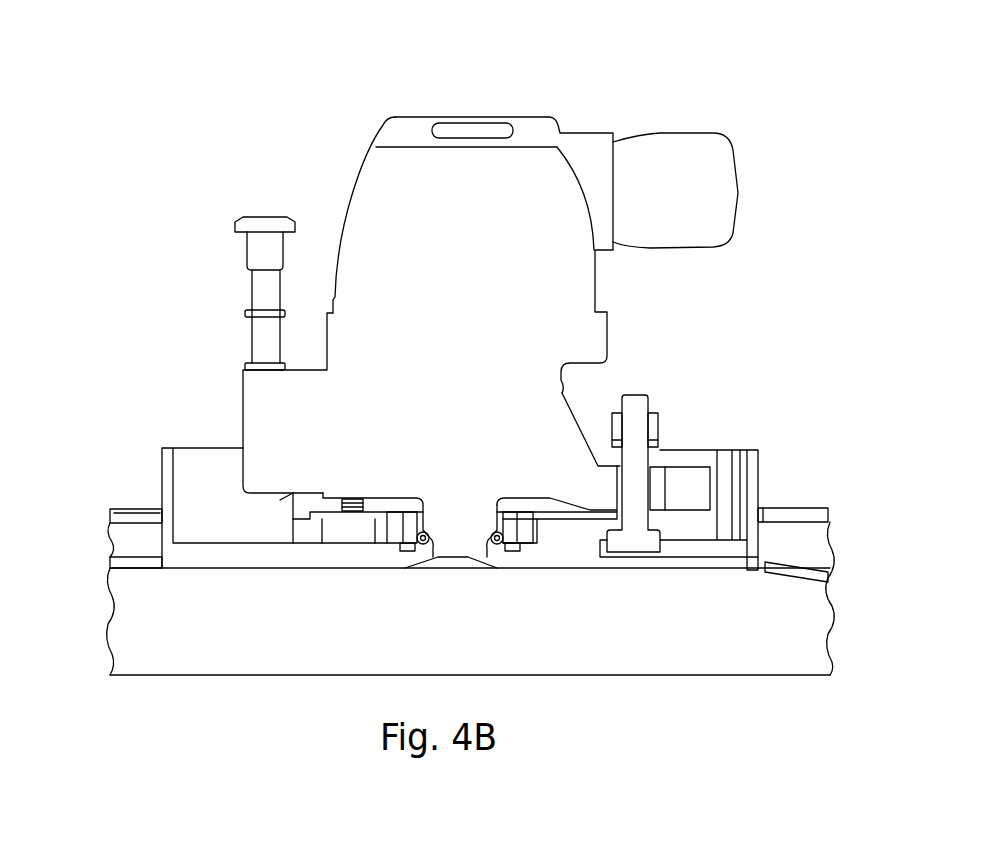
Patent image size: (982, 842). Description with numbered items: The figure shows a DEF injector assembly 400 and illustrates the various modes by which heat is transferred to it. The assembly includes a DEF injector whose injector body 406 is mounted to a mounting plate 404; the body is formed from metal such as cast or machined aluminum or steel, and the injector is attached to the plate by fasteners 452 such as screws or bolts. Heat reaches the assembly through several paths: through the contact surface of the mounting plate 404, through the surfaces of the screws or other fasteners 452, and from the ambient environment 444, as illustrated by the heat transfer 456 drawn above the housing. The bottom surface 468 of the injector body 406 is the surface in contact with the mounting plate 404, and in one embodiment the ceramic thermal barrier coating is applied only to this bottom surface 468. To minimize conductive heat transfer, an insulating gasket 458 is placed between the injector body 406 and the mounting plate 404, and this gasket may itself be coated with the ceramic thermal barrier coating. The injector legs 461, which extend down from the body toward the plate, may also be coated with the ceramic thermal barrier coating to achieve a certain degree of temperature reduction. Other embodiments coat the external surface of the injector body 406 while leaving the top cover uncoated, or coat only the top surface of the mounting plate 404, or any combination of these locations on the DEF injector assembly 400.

The DEF injector assembly 400 is at (328, 82).
The ambient environment 444 is at (598, 86).
The heat transfer from the ambient environment 456 is at (712, 115).
The injector legs 461 is at (605, 482).
The fasteners 452 is at (648, 403).
The insulating gasket 458 is at (313, 510).
The injector body 406 is at (335, 469).
The mounting plate 404 is at (178, 567).
The bottom surface 468 is at (282, 493).